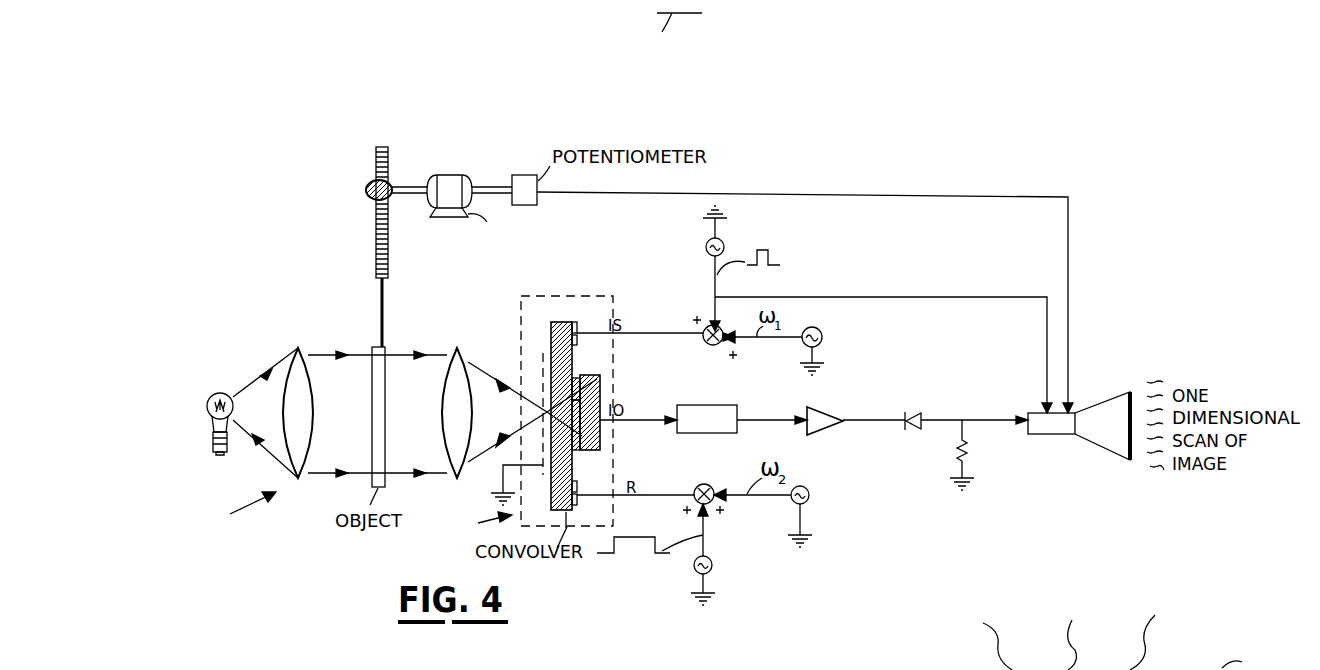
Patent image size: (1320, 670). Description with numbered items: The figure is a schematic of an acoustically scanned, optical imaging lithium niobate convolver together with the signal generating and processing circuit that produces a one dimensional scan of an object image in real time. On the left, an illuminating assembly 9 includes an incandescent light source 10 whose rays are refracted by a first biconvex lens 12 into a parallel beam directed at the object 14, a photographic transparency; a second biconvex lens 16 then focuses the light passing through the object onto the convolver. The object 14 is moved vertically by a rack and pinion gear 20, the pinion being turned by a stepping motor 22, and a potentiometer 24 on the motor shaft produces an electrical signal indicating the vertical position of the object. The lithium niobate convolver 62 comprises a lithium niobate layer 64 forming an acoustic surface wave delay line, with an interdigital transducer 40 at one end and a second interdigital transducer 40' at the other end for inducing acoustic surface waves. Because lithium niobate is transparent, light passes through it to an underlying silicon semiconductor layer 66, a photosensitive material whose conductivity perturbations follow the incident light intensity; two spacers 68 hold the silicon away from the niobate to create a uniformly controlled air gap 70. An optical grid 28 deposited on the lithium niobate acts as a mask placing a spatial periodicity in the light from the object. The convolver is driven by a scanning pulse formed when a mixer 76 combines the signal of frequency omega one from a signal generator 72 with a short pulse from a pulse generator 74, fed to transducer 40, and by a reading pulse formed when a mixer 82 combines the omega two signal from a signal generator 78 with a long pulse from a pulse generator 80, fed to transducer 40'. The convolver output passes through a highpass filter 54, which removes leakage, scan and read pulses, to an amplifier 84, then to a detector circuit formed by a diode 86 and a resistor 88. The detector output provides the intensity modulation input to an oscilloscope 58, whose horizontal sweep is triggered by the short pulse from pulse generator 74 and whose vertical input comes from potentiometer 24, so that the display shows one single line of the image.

The illuminating assembly 9 is at (239, 511).
The incandescent light source 10 is at (209, 396).
The first biconvex lens 12 is at (290, 422).
The object 14 is at (377, 422).
The second biconvex lens 16 is at (450, 422).
The rack and pinion gear 20 is at (390, 198).
The stepping motor 22 is at (450, 176).
The potentiometer 24 is at (522, 206).
The optical grid 28 is at (540, 365).
The interdigital transducer 40 is at (609, 343).
The interdigital transducer 40' is at (603, 506).
The highpass filter 54 is at (725, 406).
The oscilloscope 58 is at (1069, 435).
The lithium niobate convolver 62 is at (480, 521).
The lithium niobate layer 64 is at (568, 322).
The semiconductor layer 66 is at (601, 378).
The spacers 68 is at (576, 452).
The air gap 70 is at (600, 440).
The signal generator 72 is at (823, 340).
The pulse generator 74 is at (724, 243).
The mixer 76 is at (705, 346).
The signal generator 78 is at (810, 497).
The pulse generator 80 is at (713, 567).
The mixer 82 is at (716, 483).
The amplifier 84 is at (830, 430).
The diode 86 is at (913, 410).
The resistor 88 is at (974, 452).